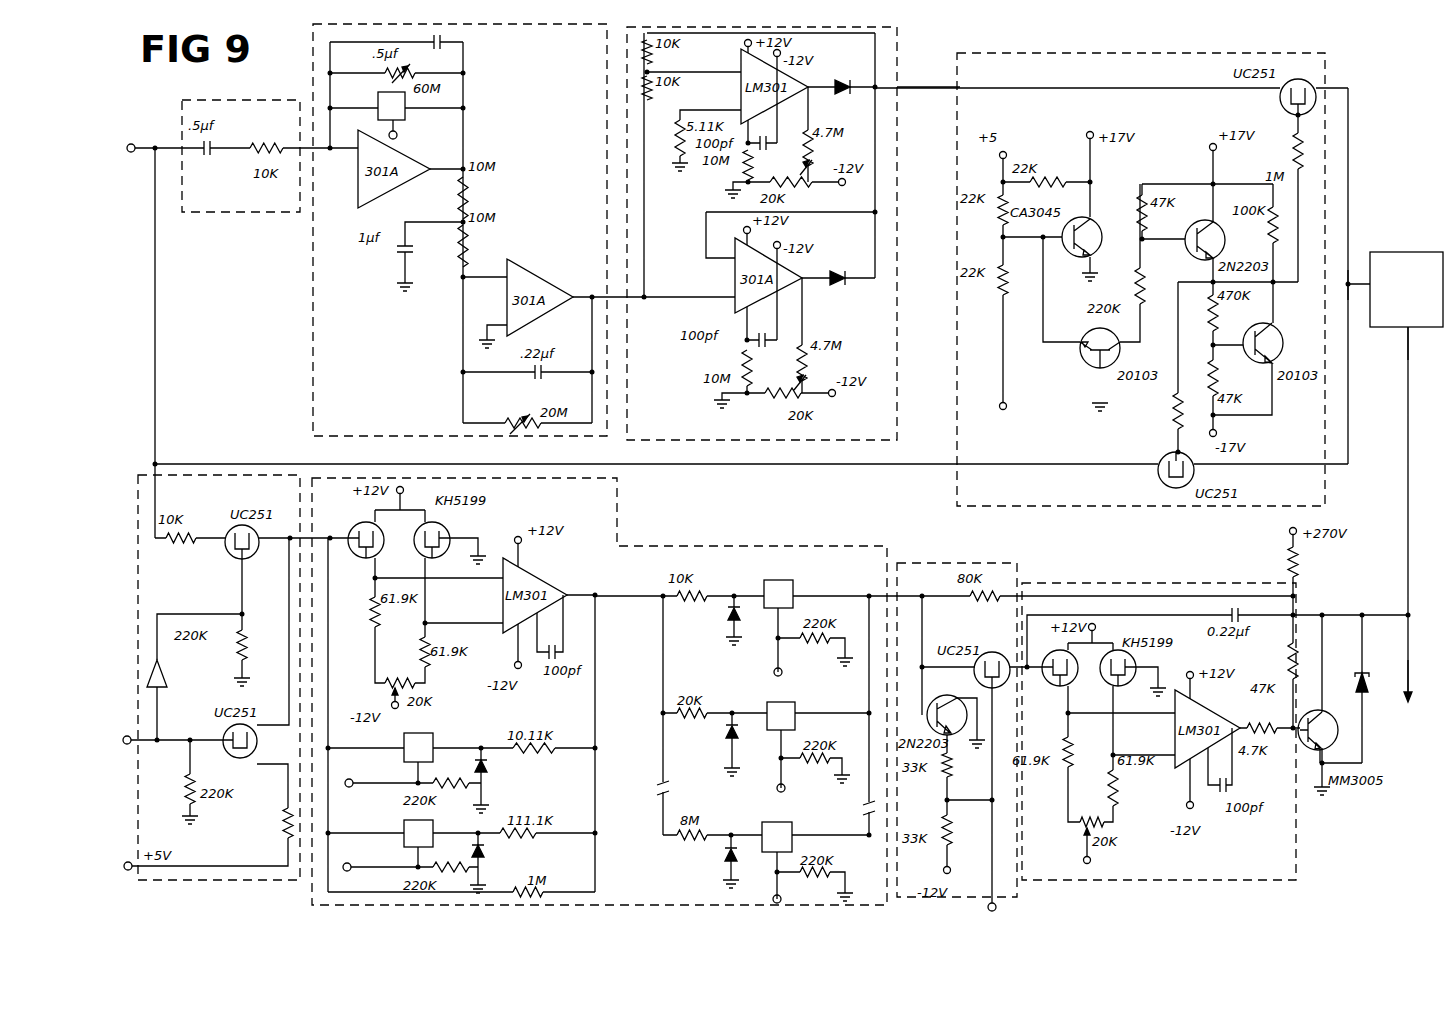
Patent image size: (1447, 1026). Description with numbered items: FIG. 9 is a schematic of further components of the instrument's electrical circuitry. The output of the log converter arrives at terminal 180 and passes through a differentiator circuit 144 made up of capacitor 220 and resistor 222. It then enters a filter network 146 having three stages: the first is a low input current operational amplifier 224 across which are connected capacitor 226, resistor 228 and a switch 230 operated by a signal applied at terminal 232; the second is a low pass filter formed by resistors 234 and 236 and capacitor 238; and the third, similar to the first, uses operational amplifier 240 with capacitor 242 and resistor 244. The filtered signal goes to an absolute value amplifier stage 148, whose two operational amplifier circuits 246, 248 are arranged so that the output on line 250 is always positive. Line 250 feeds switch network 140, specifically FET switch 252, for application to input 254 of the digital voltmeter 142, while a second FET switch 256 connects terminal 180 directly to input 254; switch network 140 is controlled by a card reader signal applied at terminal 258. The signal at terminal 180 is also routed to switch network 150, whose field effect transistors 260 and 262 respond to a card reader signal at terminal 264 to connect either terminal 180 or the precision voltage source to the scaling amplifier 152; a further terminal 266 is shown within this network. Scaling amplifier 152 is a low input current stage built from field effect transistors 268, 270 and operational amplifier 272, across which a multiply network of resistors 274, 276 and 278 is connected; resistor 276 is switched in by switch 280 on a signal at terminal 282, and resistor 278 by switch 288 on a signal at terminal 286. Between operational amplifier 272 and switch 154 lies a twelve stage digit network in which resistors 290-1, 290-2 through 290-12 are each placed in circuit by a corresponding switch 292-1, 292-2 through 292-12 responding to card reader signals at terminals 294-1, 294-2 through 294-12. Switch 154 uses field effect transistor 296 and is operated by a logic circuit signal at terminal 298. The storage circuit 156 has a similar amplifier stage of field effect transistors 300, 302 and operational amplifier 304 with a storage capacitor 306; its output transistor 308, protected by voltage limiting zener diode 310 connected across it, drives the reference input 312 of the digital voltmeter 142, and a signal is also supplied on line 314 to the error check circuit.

The terminal 180 is at (133, 143).
The differentiator circuit 144 is at (224, 213).
The capacitor 220 is at (208, 156).
The resistor 222 is at (263, 142).
The filter network 146 is at (313, 42).
The capacitor 226 is at (447, 38).
The resistor 228 is at (402, 71).
The switch 230 is at (378, 102).
The terminal 232 is at (398, 135).
The low input current operational amplifier 224 is at (358, 196).
The resistor 234 is at (470, 190).
The resistor 236 is at (470, 254).
The capacitor 238 is at (396, 253).
The operational amplifier 240 is at (540, 288).
The capacitor 242 is at (532, 375).
The resistor 244 is at (526, 418).
The absolute value amplifier stage 148 is at (897, 48).
The operational amplifier circuit 248 is at (741, 89).
The operational amplifier circuit 246 is at (735, 289).
The line 250 is at (939, 90).
The switch network 140 is at (957, 214).
The FET switch 252 is at (1280, 98).
The terminal 258 is at (1007, 407).
The second FET switch 256 is at (1160, 470).
The input 254 is at (1362, 280).
The digital voltmeter 142 is at (1420, 252).
The reference input 312 is at (1410, 340).
The line 314 is at (1411, 698).
The switch network 150 is at (138, 475).
The field effect transistor 260 is at (235, 527).
The field effect transistor 262 is at (226, 736).
The terminal 264 is at (131, 745).
The supply terminal 266 is at (132, 870).
The scaling amplifier 152 is at (648, 546).
The field effect transistor 268 is at (360, 524).
The field effect transistor 270 is at (448, 528).
The operational amplifier 272 is at (535, 580).
The switch 288 is at (404, 745).
The terminal 286 is at (356, 771).
The resistor 278 is at (546, 756).
The switch 280 is at (404, 830).
The terminal 282 is at (350, 863).
The resistor 276 is at (530, 836).
The resistor 274 is at (548, 888).
The resistor 290-1 is at (698, 592).
The switch 292-1 is at (795, 581).
The terminal 294-1 is at (774, 672).
The resistor 290-2 is at (695, 720).
The switch 292-2 is at (797, 703).
The terminal 294-2 is at (777, 788).
The resistor 290-12 is at (690, 841).
The switch 292-12 is at (790, 822).
The terminal 294-12 is at (773, 899).
The switch 154 is at (958, 562).
The field effect transistor 296 is at (1002, 655).
The terminal 298 is at (997, 906).
The storage circuit 156 is at (1102, 583).
The field effect transistor 300 is at (1050, 682).
The field effect transistor 302 is at (1110, 683).
The operational amplifier 304 is at (1215, 718).
The storage capacitor 306 is at (1228, 617).
The output transistor 308 is at (1316, 750).
The voltage limiting zener diode 310 is at (1366, 690).